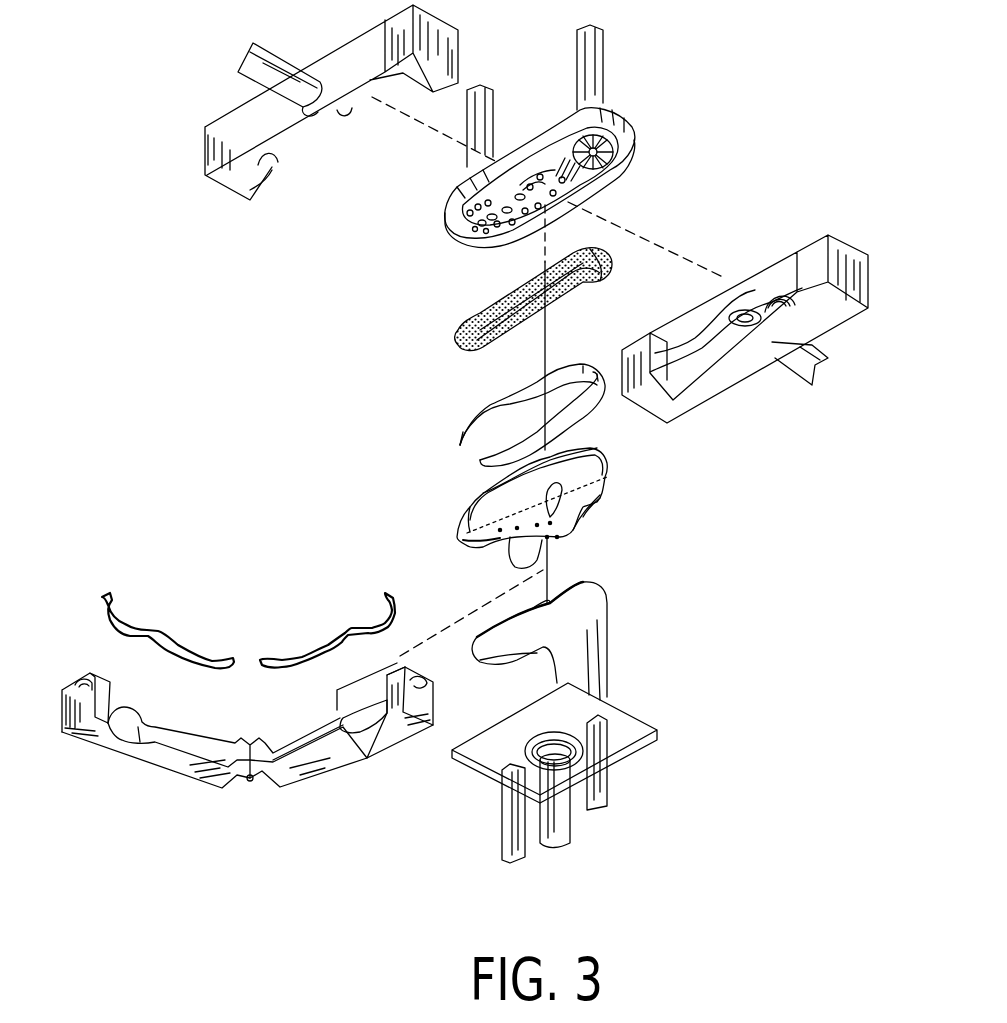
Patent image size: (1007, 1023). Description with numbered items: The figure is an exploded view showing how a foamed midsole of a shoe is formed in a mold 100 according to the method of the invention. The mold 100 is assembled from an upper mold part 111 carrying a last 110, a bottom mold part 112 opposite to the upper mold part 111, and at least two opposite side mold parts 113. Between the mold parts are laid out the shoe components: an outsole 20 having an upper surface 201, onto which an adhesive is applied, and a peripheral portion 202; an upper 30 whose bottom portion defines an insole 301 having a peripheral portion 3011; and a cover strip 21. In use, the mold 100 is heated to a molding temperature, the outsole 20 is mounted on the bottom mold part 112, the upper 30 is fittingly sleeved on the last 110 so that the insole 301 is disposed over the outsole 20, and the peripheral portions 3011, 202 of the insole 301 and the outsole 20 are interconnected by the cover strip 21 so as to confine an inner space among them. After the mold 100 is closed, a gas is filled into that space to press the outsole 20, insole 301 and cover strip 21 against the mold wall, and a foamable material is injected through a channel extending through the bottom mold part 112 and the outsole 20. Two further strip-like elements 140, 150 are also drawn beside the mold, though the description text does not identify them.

The mold 100 is at (363, 800).
The last 110 is at (593, 603).
The upper mold part 111 is at (632, 758).
The bottom mold part 112 is at (624, 108).
The side mold parts 113 is at (217, 190).
The left strip 140 is at (120, 623).
The right strip 150 is at (382, 620).
The outsole 20 is at (527, 304).
The upper surface 201 is at (573, 280).
The peripheral portion 202 is at (597, 283).
The cover strip 21 is at (493, 405).
The upper 30 is at (523, 495).
The insole 301 is at (597, 448).
The peripheral portion 3011 is at (607, 463).